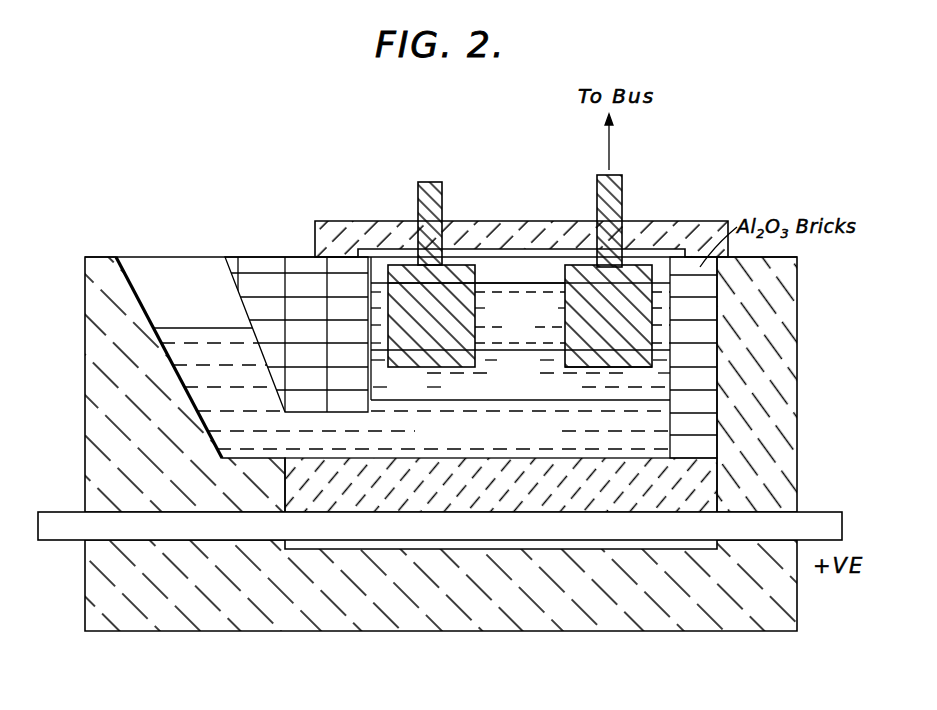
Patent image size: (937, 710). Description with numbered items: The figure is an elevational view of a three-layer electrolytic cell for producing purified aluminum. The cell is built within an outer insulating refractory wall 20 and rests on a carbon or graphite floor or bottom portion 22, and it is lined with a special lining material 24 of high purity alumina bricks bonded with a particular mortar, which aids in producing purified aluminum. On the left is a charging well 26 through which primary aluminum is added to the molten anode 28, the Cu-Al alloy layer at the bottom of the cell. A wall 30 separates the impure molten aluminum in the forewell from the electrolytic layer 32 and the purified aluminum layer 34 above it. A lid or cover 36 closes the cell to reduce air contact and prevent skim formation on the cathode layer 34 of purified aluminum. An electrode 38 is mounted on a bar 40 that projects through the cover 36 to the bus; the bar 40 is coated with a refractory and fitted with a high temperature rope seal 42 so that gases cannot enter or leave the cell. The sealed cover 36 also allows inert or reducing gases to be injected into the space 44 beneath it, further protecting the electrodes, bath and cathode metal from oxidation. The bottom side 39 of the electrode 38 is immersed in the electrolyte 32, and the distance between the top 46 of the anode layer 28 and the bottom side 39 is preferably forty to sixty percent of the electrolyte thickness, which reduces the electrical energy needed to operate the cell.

The outer insulating refractory wall 20 is at (630, 622).
The carbon or graphite floor 22 is at (703, 473).
The special lining material 24 is at (703, 332).
The charging well 26 is at (143, 282).
The molten anode 28 is at (658, 423).
The wall 30 is at (262, 265).
The electrolytic layer 32 is at (532, 373).
The purified aluminum layer 34 is at (493, 285).
The lid or cover 36 is at (345, 227).
The electrode 38 is at (647, 303).
The bottom side 39 is at (637, 367).
The bar 40 is at (623, 188).
The high temperature rope seal 42 is at (620, 226).
The space 44 is at (533, 268).
The top of anode layer 46 is at (387, 396).